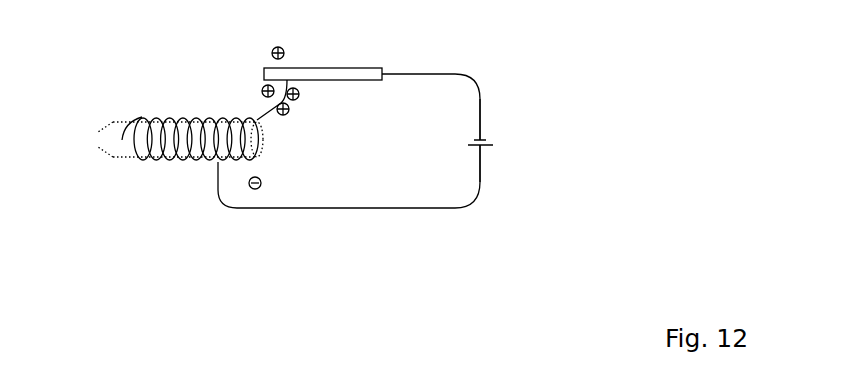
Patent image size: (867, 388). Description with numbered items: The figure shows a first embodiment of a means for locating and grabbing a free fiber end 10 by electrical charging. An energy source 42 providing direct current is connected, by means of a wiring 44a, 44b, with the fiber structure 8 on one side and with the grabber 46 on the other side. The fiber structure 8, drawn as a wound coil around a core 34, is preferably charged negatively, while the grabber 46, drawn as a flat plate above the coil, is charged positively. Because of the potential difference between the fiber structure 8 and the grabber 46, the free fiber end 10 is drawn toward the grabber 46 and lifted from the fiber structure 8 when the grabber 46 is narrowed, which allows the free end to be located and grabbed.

The fiber structure 8 is at (163, 160).
The free fiber end 10 is at (282, 101).
The core 34 is at (120, 157).
The energy source 42 is at (493, 145).
The wiring 44a is at (480, 103).
The wiring 44b is at (480, 172).
The grabber 46 is at (355, 73).